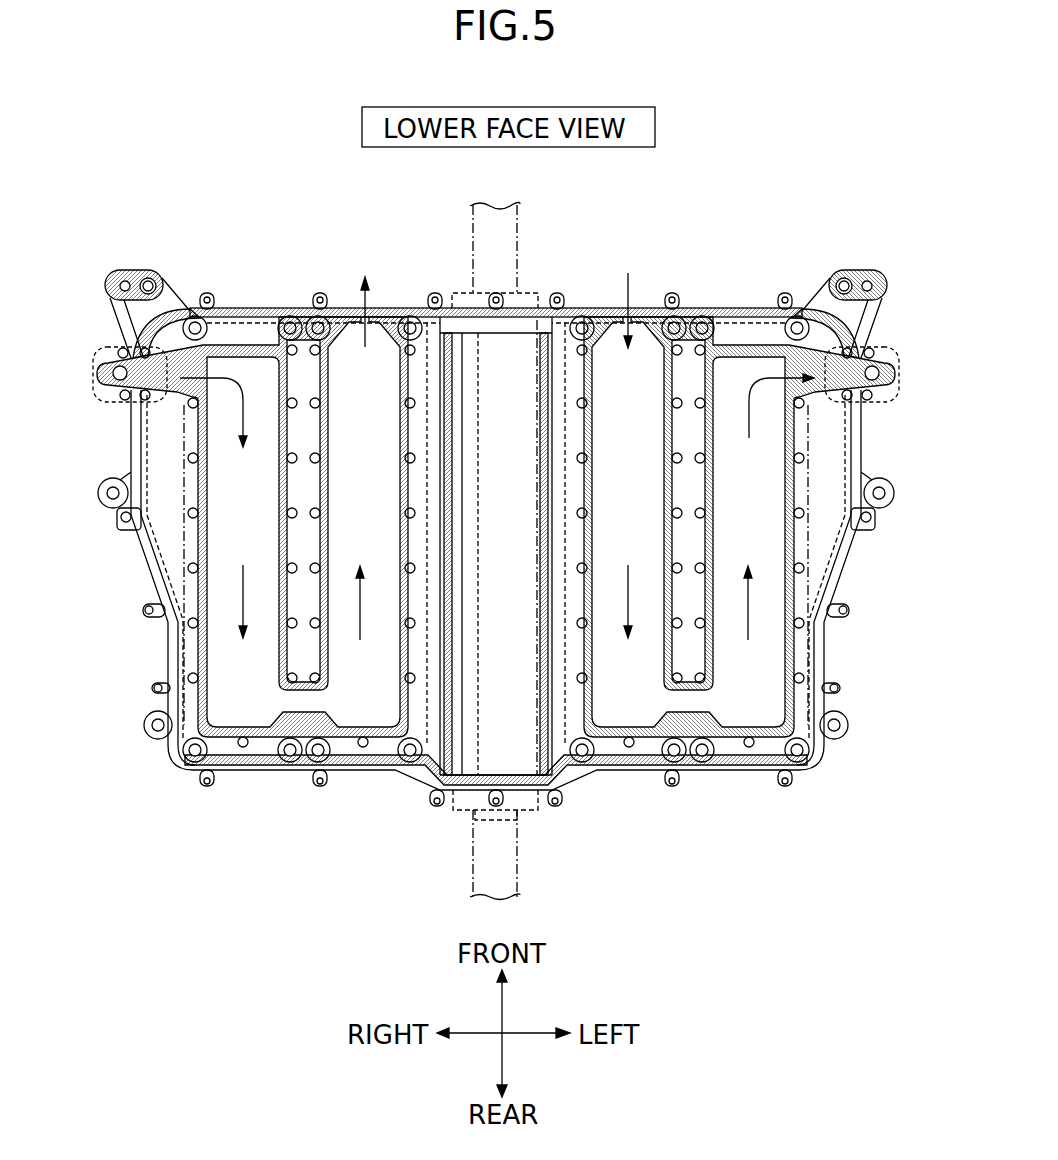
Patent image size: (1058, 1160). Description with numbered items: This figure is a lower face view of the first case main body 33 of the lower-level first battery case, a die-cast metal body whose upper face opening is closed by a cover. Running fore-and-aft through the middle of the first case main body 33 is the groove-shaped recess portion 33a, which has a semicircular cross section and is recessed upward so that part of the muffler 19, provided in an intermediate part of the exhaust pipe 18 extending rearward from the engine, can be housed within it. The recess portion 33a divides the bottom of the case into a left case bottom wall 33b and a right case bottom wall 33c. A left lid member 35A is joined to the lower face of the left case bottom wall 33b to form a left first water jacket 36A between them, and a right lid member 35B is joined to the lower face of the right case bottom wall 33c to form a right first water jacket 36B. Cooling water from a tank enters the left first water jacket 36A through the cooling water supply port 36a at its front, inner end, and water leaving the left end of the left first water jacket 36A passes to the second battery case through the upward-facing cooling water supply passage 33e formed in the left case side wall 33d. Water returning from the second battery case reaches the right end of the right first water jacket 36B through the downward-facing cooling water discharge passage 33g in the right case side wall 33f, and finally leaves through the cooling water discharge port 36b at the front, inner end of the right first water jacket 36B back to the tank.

The exhaust pipe 18 is at (519, 246).
The muffler 19 is at (538, 648).
The first case main body 33 is at (641, 262).
The recess portion 33a is at (525, 534).
The left case bottom wall 33b is at (695, 370).
The right case bottom wall 33c is at (302, 368).
The left case side wall 33d is at (858, 440).
The cooling water supply passage 33e is at (877, 378).
The right case side wall 33f is at (135, 452).
The cooling water discharge passage 33g is at (133, 365).
The left lid member 35A is at (811, 548).
The right lid member 35B is at (181, 548).
The left first water jacket 36A is at (649, 534).
The right first water jacket 36B is at (266, 534).
The cooling water supply port 36a is at (629, 298).
The cooling water discharge port 36b is at (363, 285).